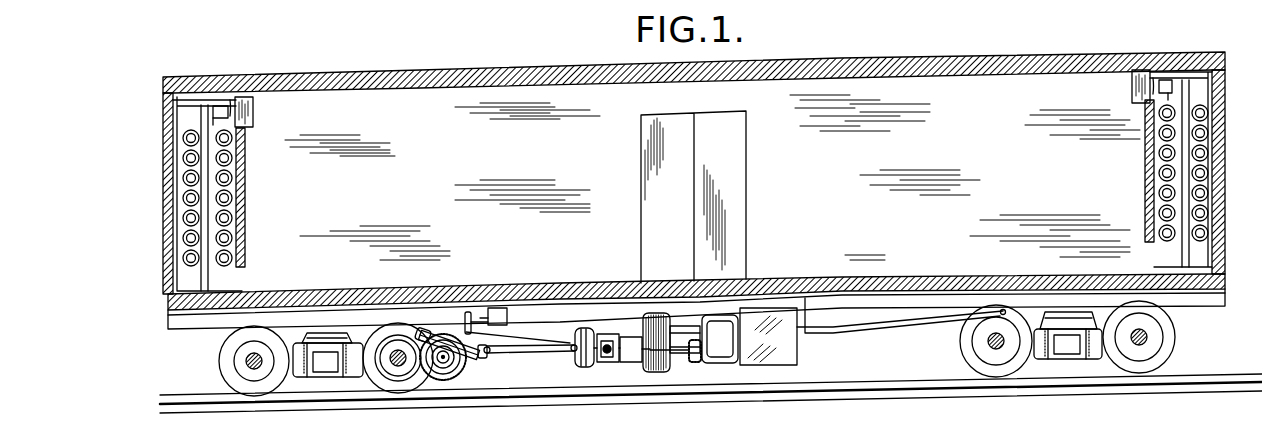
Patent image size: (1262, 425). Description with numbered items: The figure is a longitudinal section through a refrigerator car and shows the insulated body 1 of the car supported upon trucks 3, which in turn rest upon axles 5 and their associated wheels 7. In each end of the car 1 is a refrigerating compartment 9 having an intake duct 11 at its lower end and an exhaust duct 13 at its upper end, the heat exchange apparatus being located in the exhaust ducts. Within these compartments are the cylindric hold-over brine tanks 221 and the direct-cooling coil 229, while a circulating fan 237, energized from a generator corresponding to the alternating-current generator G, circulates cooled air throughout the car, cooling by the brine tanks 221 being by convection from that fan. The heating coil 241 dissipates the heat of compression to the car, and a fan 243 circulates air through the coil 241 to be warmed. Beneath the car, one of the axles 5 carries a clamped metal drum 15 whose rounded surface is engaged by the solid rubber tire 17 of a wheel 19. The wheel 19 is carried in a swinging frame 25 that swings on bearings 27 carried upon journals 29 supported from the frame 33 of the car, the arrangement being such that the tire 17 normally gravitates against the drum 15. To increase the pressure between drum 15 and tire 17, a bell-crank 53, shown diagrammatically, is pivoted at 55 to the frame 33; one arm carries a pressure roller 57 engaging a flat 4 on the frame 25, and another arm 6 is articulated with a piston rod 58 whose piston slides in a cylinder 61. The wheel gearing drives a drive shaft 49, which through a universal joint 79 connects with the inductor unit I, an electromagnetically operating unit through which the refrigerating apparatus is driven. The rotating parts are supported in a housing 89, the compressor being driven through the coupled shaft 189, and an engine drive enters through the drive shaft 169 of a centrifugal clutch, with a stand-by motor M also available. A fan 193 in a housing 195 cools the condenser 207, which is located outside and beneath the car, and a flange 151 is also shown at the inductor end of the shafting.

The insulated body of refrigerator car 1 is at (921, 86).
The trucks 3 is at (325, 370).
The flat 4 is at (481, 357).
The axles 5 is at (246, 360).
The arm of bell-crank 6 is at (474, 310).
The wheels 7 is at (238, 386).
The refrigerating compartments 9 is at (192, 114).
The intake ducts 11 is at (257, 283).
The exhaust ducts 13 is at (258, 108).
The metal drum 15 is at (405, 375).
The solid rubber tire 17 is at (437, 372).
The wheel 19 is at (450, 370).
The swinging frame 25 is at (450, 345).
The bearings 27 is at (415, 330).
The journals 29 is at (440, 336).
The frame of the car 33 is at (351, 318).
The drive shaft 49 is at (527, 352).
The bell-crank 53 is at (488, 337).
The pivot 55 is at (459, 319).
The pressure roller 57 is at (486, 354).
The piston rod 58 is at (486, 318).
The cylinder 61 is at (502, 308).
The universal joint 79 is at (571, 344).
The housing 89 is at (616, 362).
The flywheel 151 is at (585, 328).
The drive shaft of centrifugal clutch 169 is at (632, 362).
The coupled shaft 189 is at (662, 352).
The fan 193 is at (657, 312).
The housing 195 is at (645, 318).
The condenser 207 is at (797, 353).
The hold-over brine tanks 221 is at (205, 172).
The direct-cooling coil 229 is at (246, 96).
The circulating fan 237 is at (221, 104).
The heating coil 241 is at (250, 128).
The fan 243 is at (213, 119).
The alternating-current generator G is at (625, 336).
The motor M is at (683, 327).
The inductor unit I is at (575, 360).